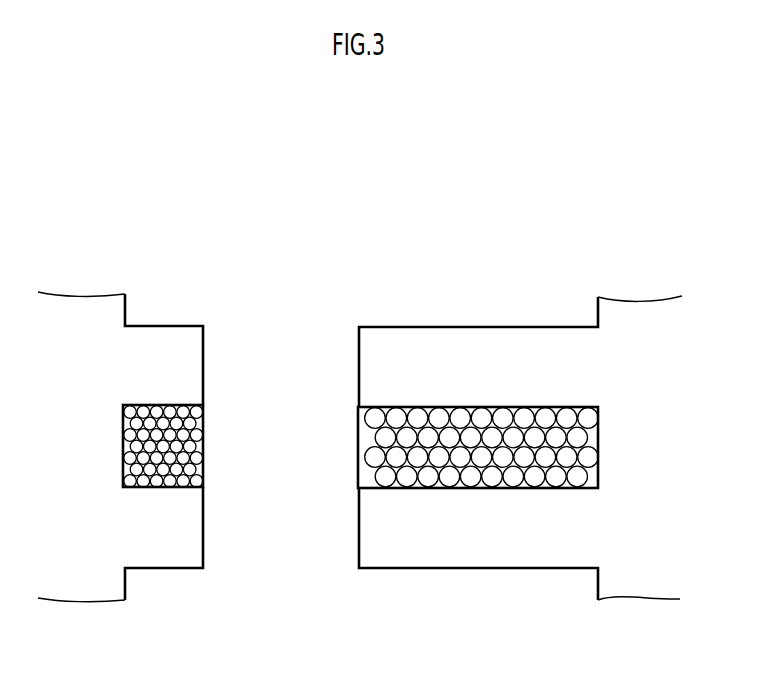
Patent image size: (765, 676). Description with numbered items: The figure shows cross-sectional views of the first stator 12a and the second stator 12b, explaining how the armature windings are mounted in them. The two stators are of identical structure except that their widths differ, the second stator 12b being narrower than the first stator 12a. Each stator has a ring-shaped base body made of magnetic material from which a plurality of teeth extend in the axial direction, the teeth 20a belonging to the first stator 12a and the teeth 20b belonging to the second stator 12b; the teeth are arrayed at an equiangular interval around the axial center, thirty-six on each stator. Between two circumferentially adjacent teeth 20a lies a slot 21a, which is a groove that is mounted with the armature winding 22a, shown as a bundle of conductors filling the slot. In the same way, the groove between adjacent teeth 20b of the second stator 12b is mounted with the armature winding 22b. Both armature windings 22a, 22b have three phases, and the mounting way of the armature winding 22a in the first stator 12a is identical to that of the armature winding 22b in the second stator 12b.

The first stator 12a is at (528, 267).
The second stator 12b is at (170, 270).
The teeth 20a is at (359, 335).
The teeth 20b is at (187, 348).
The slot 21a is at (197, 487).
The armature winding 22a is at (373, 437).
The armature winding 22b is at (202, 440).